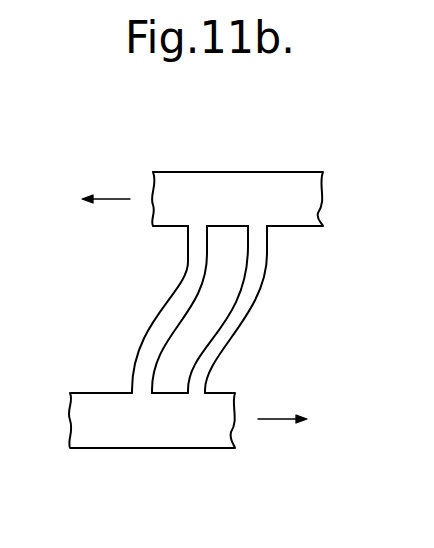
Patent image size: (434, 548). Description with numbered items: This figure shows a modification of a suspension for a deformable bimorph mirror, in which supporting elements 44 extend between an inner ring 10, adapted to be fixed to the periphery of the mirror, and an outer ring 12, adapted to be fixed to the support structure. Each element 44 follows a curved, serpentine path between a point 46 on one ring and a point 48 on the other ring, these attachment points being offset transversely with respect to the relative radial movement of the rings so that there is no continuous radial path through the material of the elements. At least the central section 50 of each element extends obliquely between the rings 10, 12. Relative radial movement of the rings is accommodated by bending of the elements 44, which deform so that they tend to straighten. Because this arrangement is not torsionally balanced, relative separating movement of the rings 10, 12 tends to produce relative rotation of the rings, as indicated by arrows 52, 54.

The inner ring 10 is at (253, 185).
The outer ring 12 is at (112, 425).
The supporting elements 44 is at (253, 260).
The point 46 is at (259, 228).
The point 48 is at (200, 389).
The central section 50 is at (230, 317).
The arrow 52 is at (107, 199).
The arrow 54 is at (277, 419).